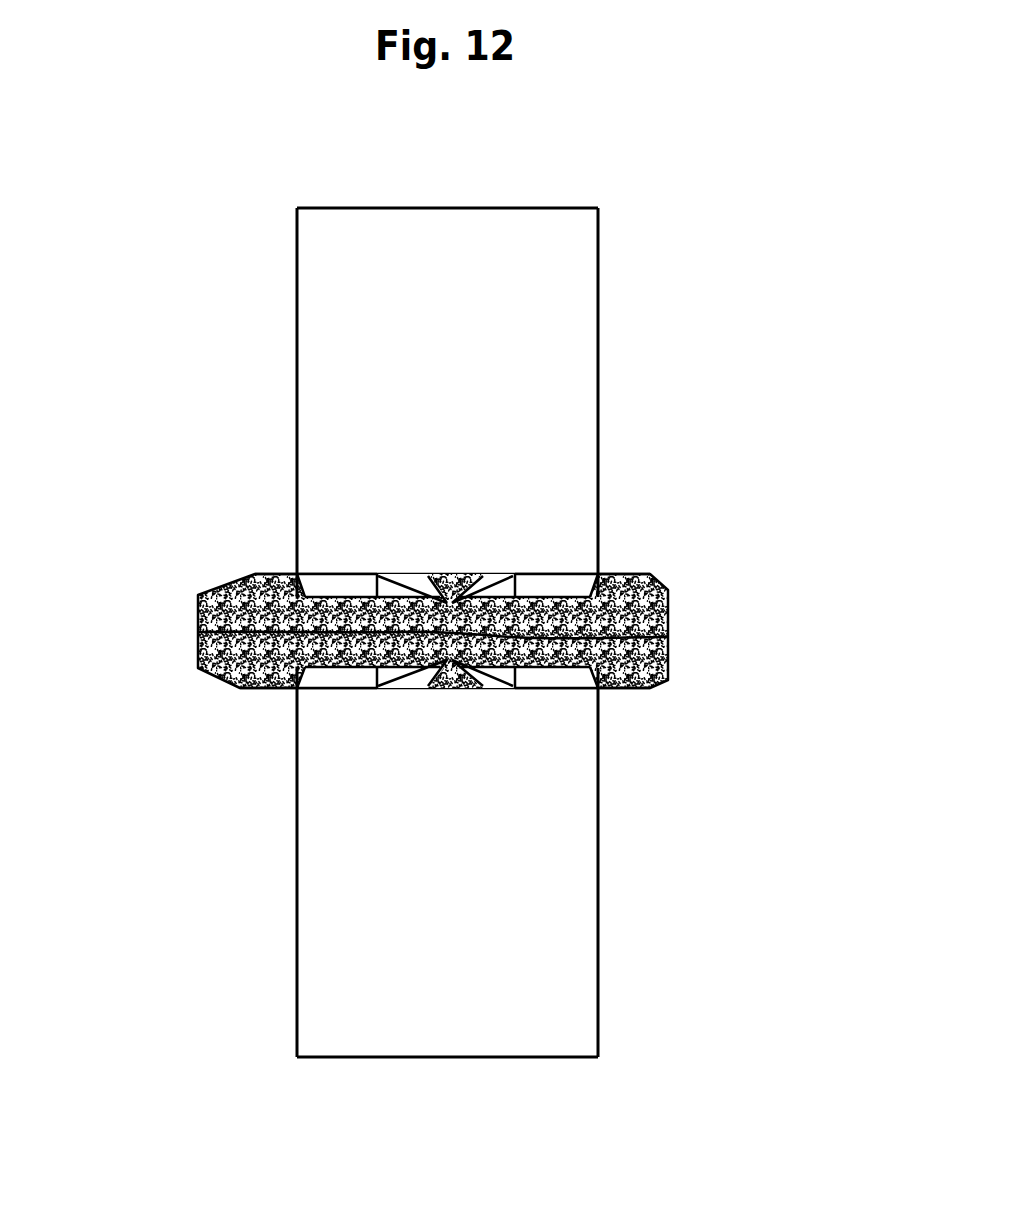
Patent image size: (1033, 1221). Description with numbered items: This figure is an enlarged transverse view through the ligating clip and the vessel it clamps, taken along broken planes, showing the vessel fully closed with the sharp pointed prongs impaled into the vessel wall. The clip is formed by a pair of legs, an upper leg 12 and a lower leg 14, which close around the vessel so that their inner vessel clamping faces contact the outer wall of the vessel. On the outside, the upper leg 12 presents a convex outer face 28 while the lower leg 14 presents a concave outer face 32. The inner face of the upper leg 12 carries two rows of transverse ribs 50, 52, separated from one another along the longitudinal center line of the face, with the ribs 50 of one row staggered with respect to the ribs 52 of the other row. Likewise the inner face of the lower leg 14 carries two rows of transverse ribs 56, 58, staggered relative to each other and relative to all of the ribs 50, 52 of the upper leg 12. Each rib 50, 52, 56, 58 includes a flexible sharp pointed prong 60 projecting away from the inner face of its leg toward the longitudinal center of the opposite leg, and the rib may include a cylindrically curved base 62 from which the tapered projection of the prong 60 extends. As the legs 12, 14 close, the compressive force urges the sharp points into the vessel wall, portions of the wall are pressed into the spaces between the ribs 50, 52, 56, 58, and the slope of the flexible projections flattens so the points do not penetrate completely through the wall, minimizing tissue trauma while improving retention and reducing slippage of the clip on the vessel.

The upper leg 12 is at (628, 438).
The lower leg 14 is at (238, 883).
The convex outer face 28 is at (557, 209).
The concave outer face 32 is at (533, 1057).
The transverse ribs 50 is at (330, 575).
The transverse ribs 52 is at (541, 577).
The transverse ribs 56 is at (328, 680).
The transverse ribs 58 is at (580, 680).
The flexible sharp pointed prong 60 is at (495, 576).
The cylindrically curved base 62 is at (342, 575).